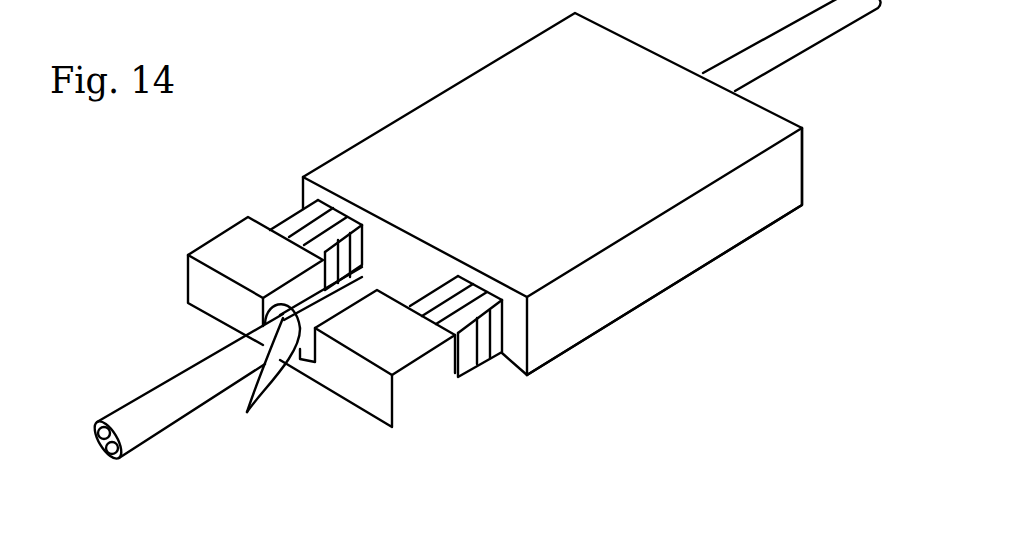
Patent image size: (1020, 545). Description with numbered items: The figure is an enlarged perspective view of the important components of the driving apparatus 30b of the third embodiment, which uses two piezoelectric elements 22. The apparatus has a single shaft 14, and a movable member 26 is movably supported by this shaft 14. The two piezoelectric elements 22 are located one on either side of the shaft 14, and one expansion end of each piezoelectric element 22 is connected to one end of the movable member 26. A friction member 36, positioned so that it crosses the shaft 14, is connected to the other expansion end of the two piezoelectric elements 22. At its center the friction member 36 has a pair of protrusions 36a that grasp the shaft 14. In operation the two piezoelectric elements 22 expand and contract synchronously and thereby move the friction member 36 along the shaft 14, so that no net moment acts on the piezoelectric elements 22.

The shaft 14 is at (168, 395).
The piezoelectric element 22 is at (298, 213).
The movable member 26 is at (677, 268).
The driving apparatus 30b is at (433, 98).
The friction member 36 is at (348, 387).
The protrusion 36a is at (263, 376).